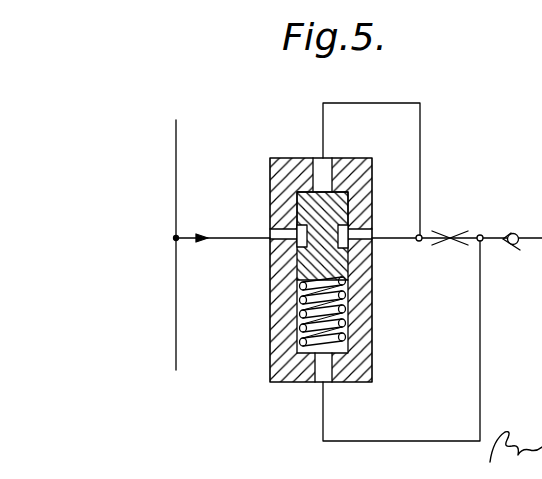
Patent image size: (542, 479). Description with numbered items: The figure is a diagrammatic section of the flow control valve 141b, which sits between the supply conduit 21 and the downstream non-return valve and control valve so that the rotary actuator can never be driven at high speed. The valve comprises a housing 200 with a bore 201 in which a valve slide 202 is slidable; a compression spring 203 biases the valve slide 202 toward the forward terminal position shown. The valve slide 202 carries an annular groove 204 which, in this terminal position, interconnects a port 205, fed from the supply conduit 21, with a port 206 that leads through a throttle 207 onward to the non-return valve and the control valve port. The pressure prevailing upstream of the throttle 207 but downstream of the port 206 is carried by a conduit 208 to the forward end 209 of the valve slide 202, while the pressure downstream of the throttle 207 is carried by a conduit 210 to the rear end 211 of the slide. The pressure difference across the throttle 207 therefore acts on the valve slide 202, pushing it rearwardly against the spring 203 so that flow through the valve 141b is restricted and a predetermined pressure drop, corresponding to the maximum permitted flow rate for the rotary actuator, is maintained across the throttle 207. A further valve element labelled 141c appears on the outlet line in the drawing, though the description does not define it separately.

The supply conduit 21 is at (178, 178).
The flow control valve 141b is at (345, 240).
The check valve 141c is at (522, 222).
The housing 200 is at (372, 333).
The bore 201 is at (300, 345).
The valve slide 202 is at (322, 256).
The compression spring 203 is at (347, 344).
The annular groove 204 is at (355, 220).
The port 205 is at (297, 240).
The port 206 is at (349, 243).
The throttle 207 is at (452, 232).
The conduit 208 is at (405, 91).
The forward end 209 is at (318, 201).
The conduit 210 is at (381, 441).
The rear end 211 is at (300, 278).